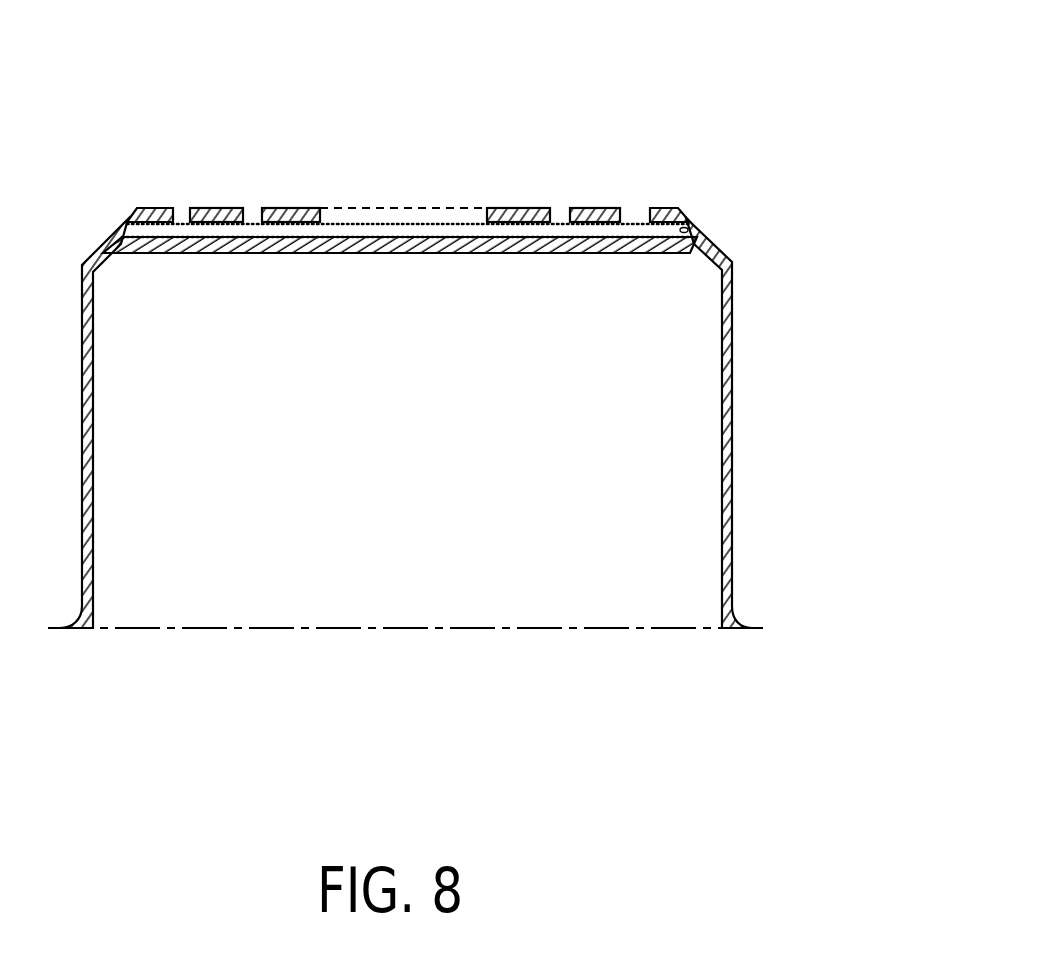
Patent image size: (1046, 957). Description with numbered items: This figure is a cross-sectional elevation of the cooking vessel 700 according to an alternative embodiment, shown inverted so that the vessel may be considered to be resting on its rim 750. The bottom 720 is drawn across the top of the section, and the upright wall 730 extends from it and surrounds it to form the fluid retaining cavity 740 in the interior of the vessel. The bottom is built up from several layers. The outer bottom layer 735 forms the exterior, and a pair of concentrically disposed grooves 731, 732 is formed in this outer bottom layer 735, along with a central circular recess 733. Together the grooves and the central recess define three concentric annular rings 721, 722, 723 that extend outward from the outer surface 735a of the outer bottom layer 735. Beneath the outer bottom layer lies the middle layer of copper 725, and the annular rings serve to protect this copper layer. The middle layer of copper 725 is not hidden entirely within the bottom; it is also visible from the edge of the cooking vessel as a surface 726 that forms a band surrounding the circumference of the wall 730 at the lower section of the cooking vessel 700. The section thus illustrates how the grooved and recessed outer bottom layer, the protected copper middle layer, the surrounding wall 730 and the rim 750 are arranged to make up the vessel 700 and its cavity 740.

The cooking vessel 700 is at (661, 96).
The bottom 720 is at (383, 117).
The concentric annular ring 721 is at (153, 207).
The concentric annular ring 722 is at (220, 207).
The concentric annular ring 723 is at (292, 207).
The middle layer of copper 725 is at (683, 230).
The surface 726 is at (708, 242).
The upright wall 730 is at (733, 298).
The groove 731 is at (640, 207).
The groove 732 is at (562, 207).
The central circular recess 733 is at (460, 207).
The outer bottom layer 735 is at (123, 213).
The outer surface 735a is at (362, 207).
The fluid retaining cavity 740 is at (427, 457).
The rim 750 is at (737, 629).